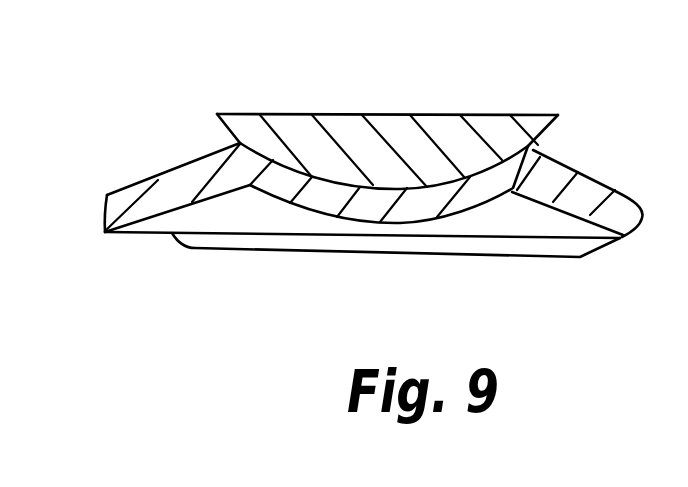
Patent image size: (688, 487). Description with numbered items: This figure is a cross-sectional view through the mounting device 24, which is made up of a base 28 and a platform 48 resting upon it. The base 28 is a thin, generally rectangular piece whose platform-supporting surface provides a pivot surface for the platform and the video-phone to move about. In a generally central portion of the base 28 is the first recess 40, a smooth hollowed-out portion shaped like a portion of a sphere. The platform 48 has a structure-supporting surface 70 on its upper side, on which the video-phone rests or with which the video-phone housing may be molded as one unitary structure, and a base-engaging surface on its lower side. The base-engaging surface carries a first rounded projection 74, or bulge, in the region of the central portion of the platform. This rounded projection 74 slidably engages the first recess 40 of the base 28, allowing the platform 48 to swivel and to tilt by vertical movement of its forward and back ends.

The mounting device 24 is at (157, 66).
The base 28 is at (203, 240).
The first recess 40 is at (412, 188).
The platform 48 is at (495, 90).
The structure-supporting surface 70 is at (298, 113).
The first rounded projection 74 is at (512, 140).